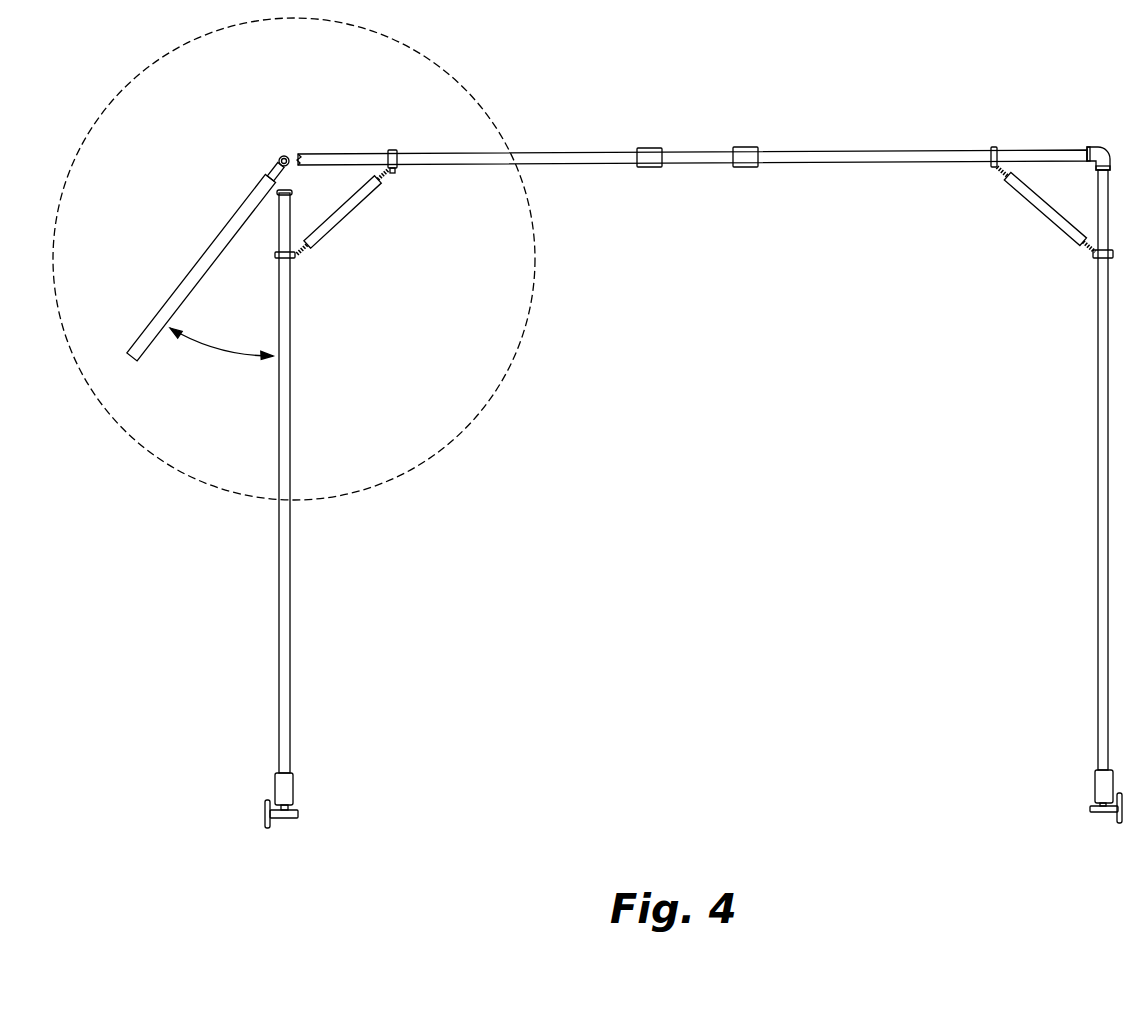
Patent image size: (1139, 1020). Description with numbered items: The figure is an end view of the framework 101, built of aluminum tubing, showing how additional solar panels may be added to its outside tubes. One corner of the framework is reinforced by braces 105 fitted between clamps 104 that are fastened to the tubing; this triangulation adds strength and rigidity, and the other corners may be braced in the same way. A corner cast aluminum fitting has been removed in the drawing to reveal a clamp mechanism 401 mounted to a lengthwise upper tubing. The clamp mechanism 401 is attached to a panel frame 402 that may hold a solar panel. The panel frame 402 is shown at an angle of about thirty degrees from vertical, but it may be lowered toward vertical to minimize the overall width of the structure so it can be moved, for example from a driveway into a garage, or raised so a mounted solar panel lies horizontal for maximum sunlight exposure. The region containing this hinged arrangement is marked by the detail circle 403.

The framework 101 is at (287, 157).
The clamp 104 is at (392, 150).
The brace 105 is at (372, 190).
The clamp mechanism 401 is at (284, 156).
The panel frame 402 is at (217, 243).
The detail circle 403 is at (463, 85).